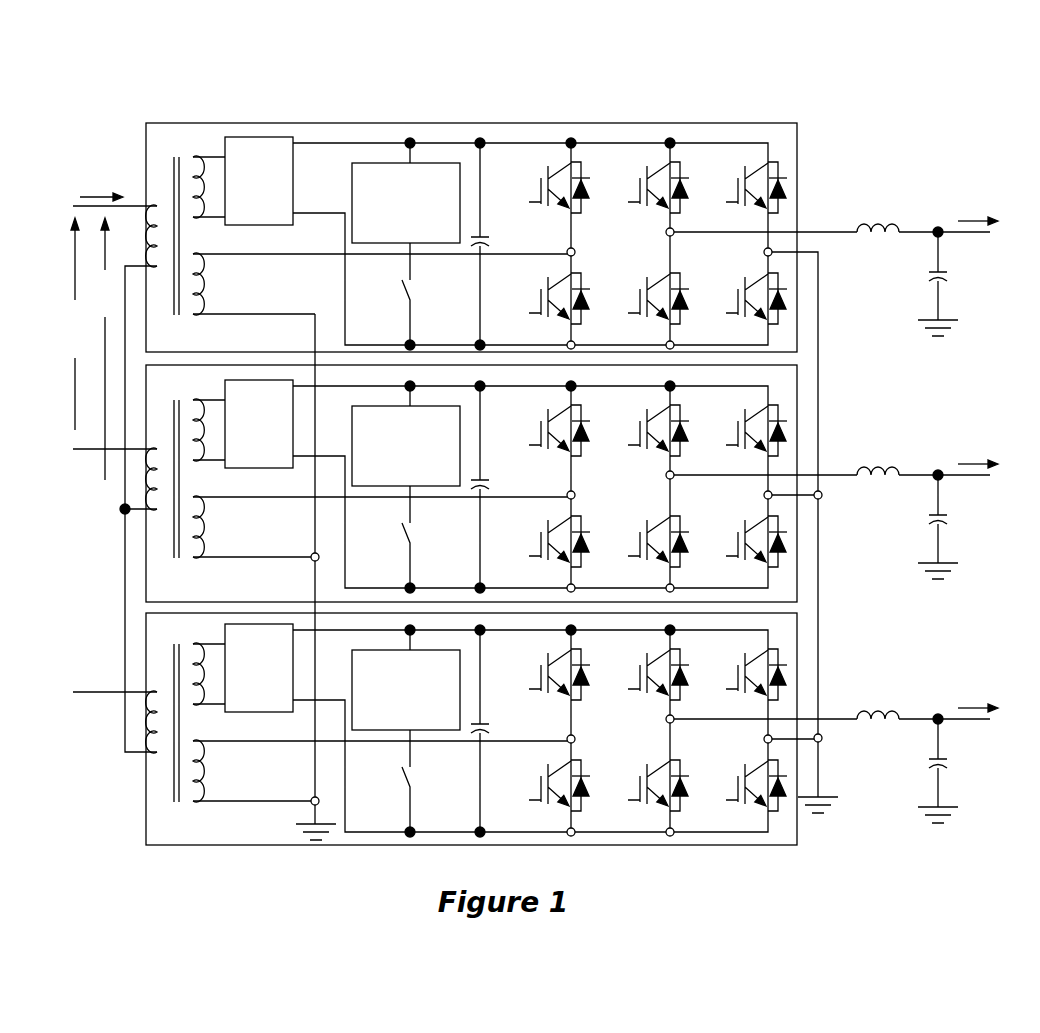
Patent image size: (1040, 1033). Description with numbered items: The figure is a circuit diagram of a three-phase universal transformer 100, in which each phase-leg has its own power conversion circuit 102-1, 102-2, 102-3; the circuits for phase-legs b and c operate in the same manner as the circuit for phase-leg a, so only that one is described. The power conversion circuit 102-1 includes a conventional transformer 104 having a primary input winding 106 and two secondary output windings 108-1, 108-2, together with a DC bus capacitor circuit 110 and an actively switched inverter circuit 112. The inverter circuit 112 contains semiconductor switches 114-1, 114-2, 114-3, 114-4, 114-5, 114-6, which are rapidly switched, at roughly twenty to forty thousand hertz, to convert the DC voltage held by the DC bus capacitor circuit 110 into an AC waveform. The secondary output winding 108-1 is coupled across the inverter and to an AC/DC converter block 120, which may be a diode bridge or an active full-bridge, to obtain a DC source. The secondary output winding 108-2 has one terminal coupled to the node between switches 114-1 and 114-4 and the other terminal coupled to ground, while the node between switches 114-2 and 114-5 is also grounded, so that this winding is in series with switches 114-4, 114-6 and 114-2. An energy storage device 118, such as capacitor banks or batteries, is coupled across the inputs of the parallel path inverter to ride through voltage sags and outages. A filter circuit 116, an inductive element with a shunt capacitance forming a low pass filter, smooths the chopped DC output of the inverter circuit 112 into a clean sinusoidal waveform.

The three-phase universal transformer 100 is at (511, 32).
The power conversion circuit 102-1 is at (797, 122).
The power conversion circuit 102-2 is at (799, 364).
The power conversion circuit 102-3 is at (800, 616).
The transformer 104 is at (168, 151).
The primary input winding 106 is at (150, 206).
The secondary output winding 108-1 is at (193, 156).
The secondary output winding 108-2 is at (203, 270).
The DC bus capacitor circuit 110 is at (483, 190).
The switched inverter circuit 112 is at (659, 110).
The semiconductor switch 114-1 is at (545, 188).
The semiconductor switch 114-2 is at (738, 293).
The semiconductor switch 114-3 is at (644, 188).
The semiconductor switch 114-4 is at (538, 293).
The semiconductor switch 114-5 is at (738, 188).
The semiconductor switch 114-6 is at (644, 293).
The filter circuit 116 is at (965, 165).
The energy storage device 118 is at (395, 232).
The AC/DC converter block 120 is at (248, 204).